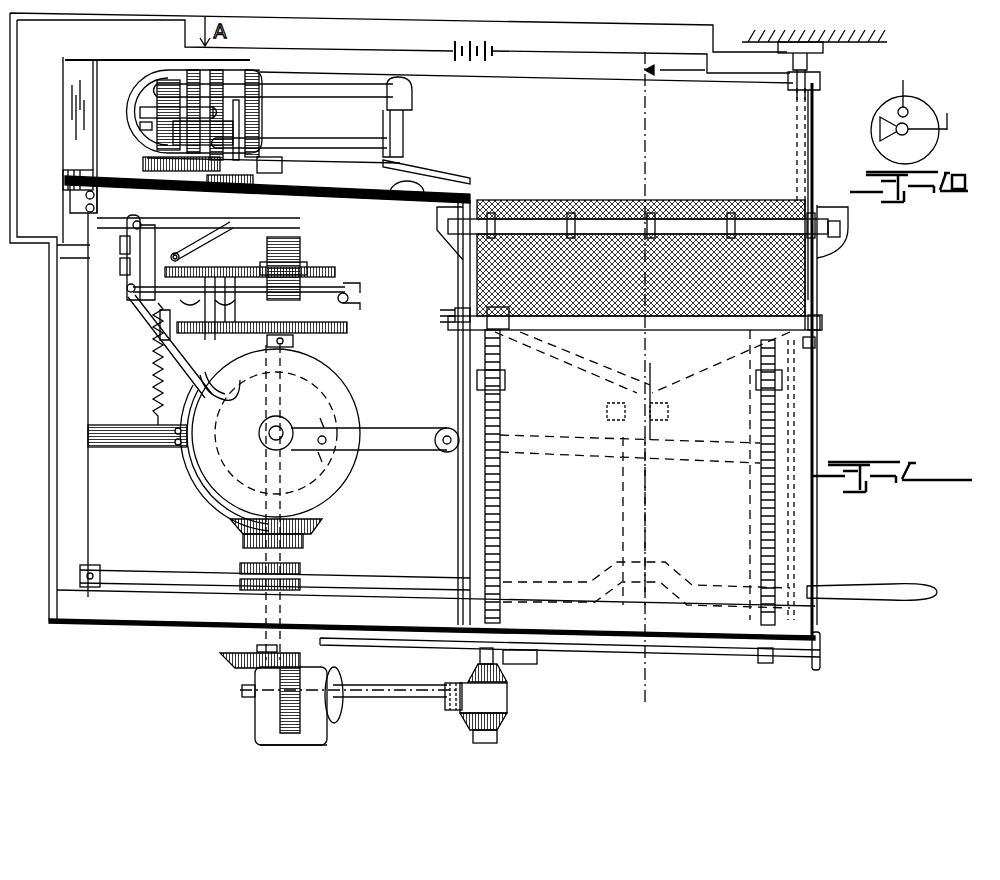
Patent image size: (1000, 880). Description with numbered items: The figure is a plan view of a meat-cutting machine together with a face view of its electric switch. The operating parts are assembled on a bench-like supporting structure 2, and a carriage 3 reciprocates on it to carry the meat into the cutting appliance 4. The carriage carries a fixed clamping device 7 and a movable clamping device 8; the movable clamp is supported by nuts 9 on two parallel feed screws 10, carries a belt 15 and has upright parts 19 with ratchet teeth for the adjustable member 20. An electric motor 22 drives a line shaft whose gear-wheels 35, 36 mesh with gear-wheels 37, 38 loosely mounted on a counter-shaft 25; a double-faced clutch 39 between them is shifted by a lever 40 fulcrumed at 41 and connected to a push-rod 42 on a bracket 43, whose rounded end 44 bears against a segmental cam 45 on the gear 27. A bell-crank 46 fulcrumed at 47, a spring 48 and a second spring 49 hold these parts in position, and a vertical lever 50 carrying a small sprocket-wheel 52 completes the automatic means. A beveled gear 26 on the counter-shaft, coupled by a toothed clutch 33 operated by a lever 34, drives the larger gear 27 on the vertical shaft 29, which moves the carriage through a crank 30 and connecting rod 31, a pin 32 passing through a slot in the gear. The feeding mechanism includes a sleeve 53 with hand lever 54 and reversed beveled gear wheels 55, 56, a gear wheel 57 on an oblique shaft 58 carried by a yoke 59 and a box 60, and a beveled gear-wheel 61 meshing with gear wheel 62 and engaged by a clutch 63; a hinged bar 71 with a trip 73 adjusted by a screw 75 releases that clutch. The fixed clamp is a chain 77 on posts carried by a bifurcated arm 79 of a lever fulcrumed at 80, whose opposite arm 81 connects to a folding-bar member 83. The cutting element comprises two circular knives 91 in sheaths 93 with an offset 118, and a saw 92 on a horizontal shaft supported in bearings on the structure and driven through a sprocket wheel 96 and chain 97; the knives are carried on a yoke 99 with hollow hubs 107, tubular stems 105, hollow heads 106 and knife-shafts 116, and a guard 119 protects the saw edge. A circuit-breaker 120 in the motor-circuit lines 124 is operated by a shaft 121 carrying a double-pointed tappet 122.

In FIG. 1, the supporting structure 2 is at (814, 162).
In FIG. 1, the carriage 3 is at (818, 352).
In FIG. 1, the cutting appliance 4 is at (128, 99).
In FIG. 1, the clamping device 7 is at (814, 205).
In FIG. 1, the clamping device 8 is at (423, 520).
In FIG. 1, the nuts 9 is at (477, 381).
In FIG. 1, the feed screws 10 is at (502, 491).
In FIG. 1, the belt 15 is at (810, 292).
In FIG. 1, the upright parts 19 is at (447, 316).
In FIG. 1, the adjustable member 20 is at (542, 333).
In FIG. 1, the electric motor 22 is at (122, 268).
In FIG. 1, the counter-shaft 25 is at (295, 342).
In FIG. 1, the beveled gear 26 is at (232, 523).
In FIG. 1, the gear 27 is at (335, 388).
In FIG. 1, the vertical shaft 29 is at (284, 426).
In FIG. 1, the crank 30 is at (395, 430).
In FIG. 1, the connecting rod 31 is at (630, 475).
In FIG. 1, the pin 32 is at (328, 436).
In FIG. 1, the toothed clutch 33 is at (240, 566).
In FIG. 1, the lever 34 is at (388, 576).
In FIG. 1, the gear-wheel 35 is at (226, 267).
In FIG. 1, the gear-wheel 36 is at (170, 340).
In FIG. 1, the gear-wheel 37 is at (302, 264).
In FIG. 1, the gear-wheel 38 is at (342, 331).
In FIG. 1, the double-faced clutch 39 is at (330, 289).
In FIG. 1, the lever 40 is at (262, 308).
In FIG. 1, the fulcrum 41 is at (360, 298).
In FIG. 1, the push-rod 42 is at (150, 328).
In FIG. 1, the bracket 43 is at (120, 264).
In FIG. 1, the rounded end 44 is at (205, 396).
In FIG. 1, the segmental cam 45 is at (196, 469).
In FIG. 1, the bell-crank 46 is at (148, 220).
In FIG. 1, the fulcrum 47 is at (200, 228).
In FIG. 1, the spring 48 is at (120, 243).
In FIG. 1, the spring 49 is at (153, 379).
In FIG. 1, the lever 50 is at (180, 254).
In FIG. 1, the sprocket-wheel 52 is at (275, 170).
In FIG. 1, the sleeve 53 is at (507, 695).
In FIG. 1, the hand lever 54 is at (540, 656).
In FIG. 1, the beveled gear wheel 55 is at (507, 720).
In FIG. 1, the beveled gear wheel 56 is at (507, 673).
In FIG. 1, the gear wheel 57 is at (470, 724).
In FIG. 1, the oblique shaft 58 is at (400, 685).
In FIG. 1, the yoke 59 is at (450, 681).
In FIG. 1, the box 60 is at (328, 743).
In FIG. 1, the beveled gear-wheel 61 is at (270, 710).
In FIG. 1, the gear wheel 62 is at (222, 660).
In FIG. 1, the clutch 63 is at (343, 675).
In FIG. 1, the bar 71 is at (670, 652).
In FIG. 1, the trip 73 is at (760, 658).
In FIG. 1, the screw 75 is at (821, 643).
In FIG. 1, the chain 77 is at (600, 205).
In FIG. 1, the bifurcated arm 79 is at (455, 256).
In FIG. 1, the fulcrum 80 is at (668, 411).
In FIG. 1, the arm 81 is at (646, 550).
In FIG. 1, the member 83 is at (657, 620).
In FIG. 1, the circular knives 91 is at (415, 163).
In FIG. 1, the saw 92 is at (282, 172).
In FIG. 1, the sheaths 93 is at (405, 195).
In FIG. 1, the sprocket wheel 96 is at (273, 133).
In FIG. 1, the chain 97 is at (142, 126).
In FIG. 1, the yoke 99 is at (127, 117).
In FIG. 1, the tubular stem 105 is at (305, 83).
In FIG. 1, the hollow head 106 is at (412, 92).
In FIG. 1, the hollow hub 107 is at (157, 84).
In FIG. 1, the knife-shafts 116 is at (383, 120).
In FIG. 1, the offset 118 is at (358, 198).
In FIG. 1, the guard 119 is at (63, 175).
In FIG. 1, the circuit-breaker 120 is at (790, 55).
In FIG. 10, the circuit-breaker 120 is at (908, 113).
In FIG. 1, the shaft 121 is at (820, 78).
In FIG. 1, the double-pointed tappet 122 is at (816, 342).
In FIG. 1, the motor-circuit lines 124 is at (576, 25).
In FIG. 10, the motor-circuit lines 124 is at (934, 124).